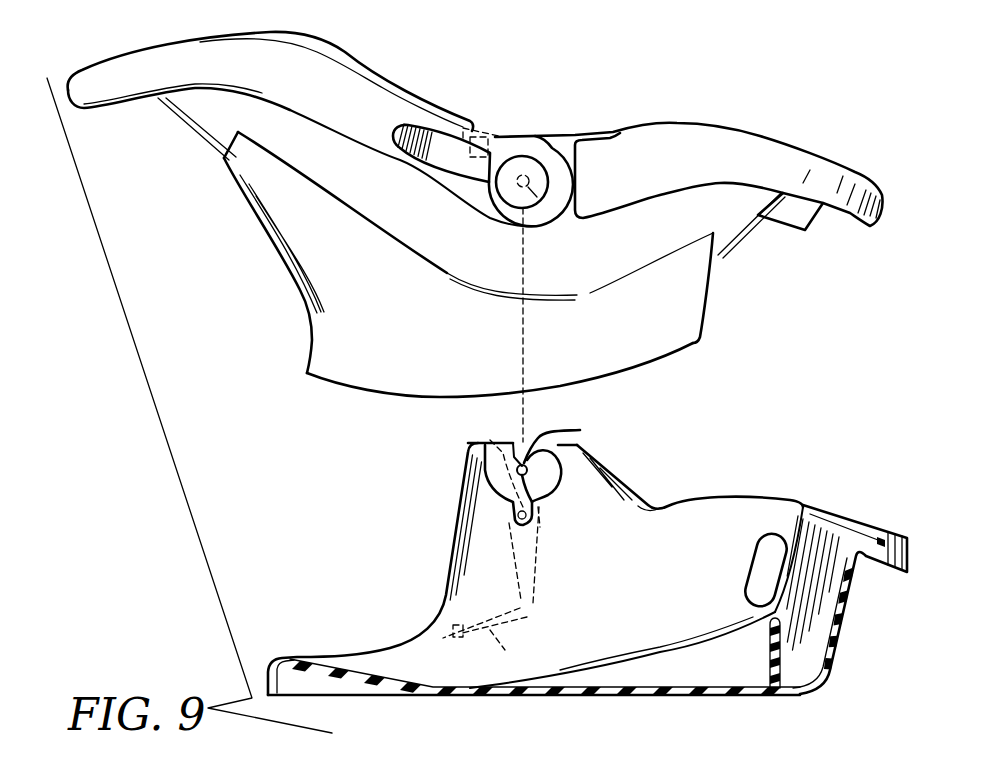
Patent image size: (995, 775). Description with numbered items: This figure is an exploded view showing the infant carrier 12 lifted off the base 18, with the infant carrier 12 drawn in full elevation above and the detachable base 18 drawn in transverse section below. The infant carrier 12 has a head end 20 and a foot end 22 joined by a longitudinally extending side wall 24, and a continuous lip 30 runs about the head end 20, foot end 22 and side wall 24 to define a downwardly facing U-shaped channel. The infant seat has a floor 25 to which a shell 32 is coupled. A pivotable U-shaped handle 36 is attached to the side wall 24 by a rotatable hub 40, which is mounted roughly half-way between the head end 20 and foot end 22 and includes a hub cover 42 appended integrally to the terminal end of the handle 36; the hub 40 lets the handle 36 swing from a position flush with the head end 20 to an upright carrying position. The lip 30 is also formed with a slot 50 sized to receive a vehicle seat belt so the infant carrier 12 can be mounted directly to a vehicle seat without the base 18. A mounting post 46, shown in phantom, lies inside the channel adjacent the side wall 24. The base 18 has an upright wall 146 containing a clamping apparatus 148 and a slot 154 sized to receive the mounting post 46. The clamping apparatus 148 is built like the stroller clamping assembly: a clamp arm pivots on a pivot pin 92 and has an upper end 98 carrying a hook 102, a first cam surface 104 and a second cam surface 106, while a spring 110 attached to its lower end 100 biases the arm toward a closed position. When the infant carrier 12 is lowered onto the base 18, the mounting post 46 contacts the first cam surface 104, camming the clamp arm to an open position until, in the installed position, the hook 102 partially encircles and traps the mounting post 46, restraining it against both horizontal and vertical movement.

The infant carrier 12 is at (778, 257).
The base 18 is at (466, 700).
The head end 20 is at (416, 247).
The foot end 22 is at (860, 190).
The side wall 24 is at (355, 142).
The floor 25 is at (733, 242).
The lip 30 is at (475, 128).
The shell 32 is at (347, 331).
The handle 36 is at (197, 53).
The hub 40 is at (538, 147).
The hub cover 42 is at (508, 157).
The mounting post 46 is at (545, 208).
The slot 50 is at (599, 127).
The pivot pin 92 is at (513, 517).
The upper end 98 is at (467, 450).
The lower end 100 is at (540, 612).
The hook 102 is at (556, 488).
The first cam surface 104 is at (518, 457).
The second cam surface 106 is at (494, 440).
The spring 110 is at (521, 645).
The upright wall 146 is at (607, 493).
The clamping apparatus 148 is at (548, 592).
The slot 154 is at (580, 430).